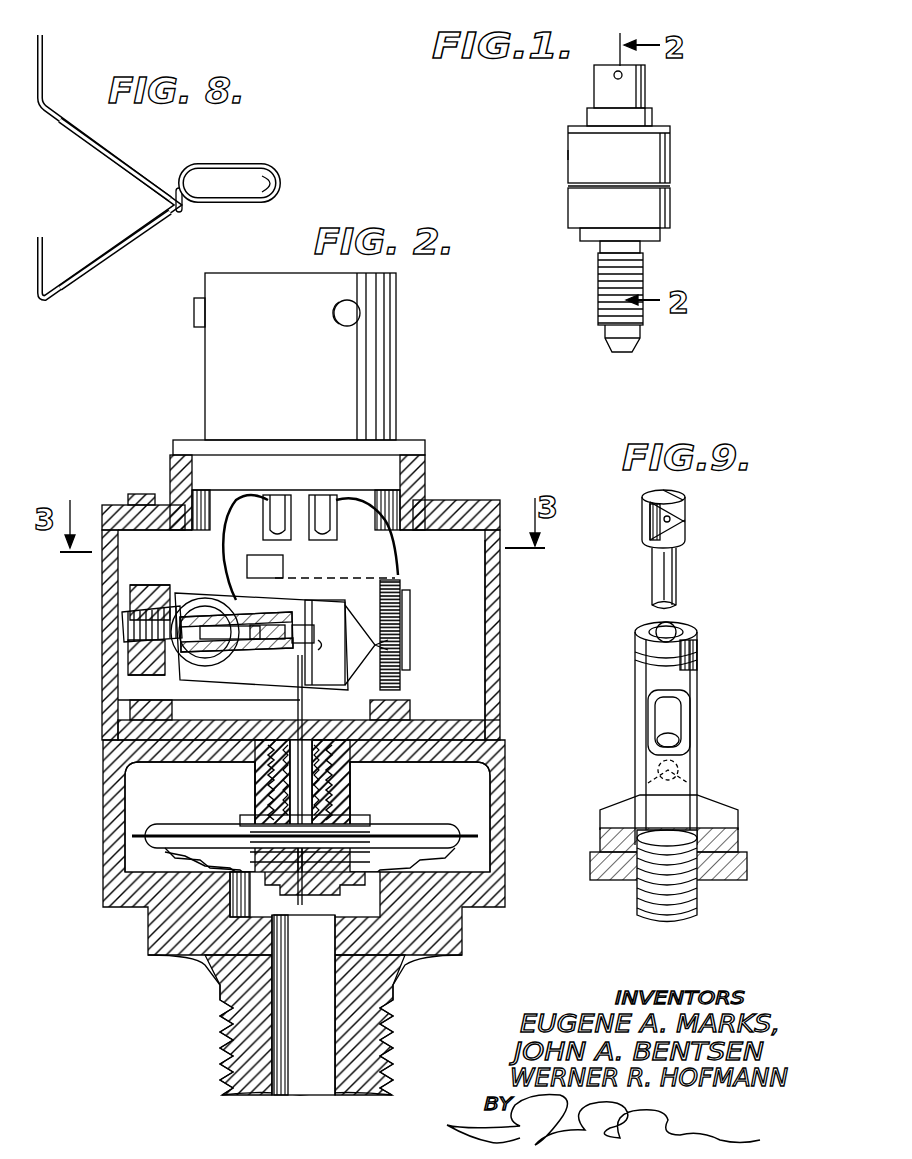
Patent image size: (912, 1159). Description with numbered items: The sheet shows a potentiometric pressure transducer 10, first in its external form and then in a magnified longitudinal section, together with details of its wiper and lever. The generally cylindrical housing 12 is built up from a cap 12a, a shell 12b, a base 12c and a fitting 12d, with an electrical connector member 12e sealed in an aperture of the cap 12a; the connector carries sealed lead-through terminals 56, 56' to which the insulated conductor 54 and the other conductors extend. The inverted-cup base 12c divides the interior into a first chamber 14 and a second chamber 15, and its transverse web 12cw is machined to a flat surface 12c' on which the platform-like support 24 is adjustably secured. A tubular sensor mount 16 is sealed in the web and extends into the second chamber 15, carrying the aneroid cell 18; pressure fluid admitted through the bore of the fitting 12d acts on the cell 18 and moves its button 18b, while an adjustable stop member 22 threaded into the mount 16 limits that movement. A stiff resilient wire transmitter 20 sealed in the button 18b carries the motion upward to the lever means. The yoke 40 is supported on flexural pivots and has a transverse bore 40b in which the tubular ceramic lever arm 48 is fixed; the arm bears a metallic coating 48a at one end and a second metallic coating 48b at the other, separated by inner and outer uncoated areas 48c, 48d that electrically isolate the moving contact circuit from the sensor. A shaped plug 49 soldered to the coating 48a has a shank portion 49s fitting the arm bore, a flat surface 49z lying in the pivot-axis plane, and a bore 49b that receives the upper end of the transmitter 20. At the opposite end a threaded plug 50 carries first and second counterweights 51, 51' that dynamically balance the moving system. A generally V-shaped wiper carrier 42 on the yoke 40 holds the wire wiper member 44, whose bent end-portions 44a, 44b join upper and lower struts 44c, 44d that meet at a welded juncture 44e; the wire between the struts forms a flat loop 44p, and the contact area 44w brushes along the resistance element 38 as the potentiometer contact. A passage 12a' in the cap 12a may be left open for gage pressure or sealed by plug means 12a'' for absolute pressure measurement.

In FIG. 1, the transducer 10 is at (672, 142).
In FIG. 1, the housing 12 is at (668, 168).
In FIG. 1, the cap 12a is at (577, 115).
In FIG. 2, the cap 12a is at (335, 485).
In FIG. 2, the passage 12a' is at (301, 549).
In FIG. 2, the plug means 12a'' is at (140, 496).
In FIG. 1, the shell 12b is at (585, 160).
In FIG. 2, the shell 12b is at (496, 635).
In FIG. 1, the base 12c is at (588, 220).
In FIG. 2, the base 12c is at (338, 847).
In FIG. 2, the flat surface 12c' is at (431, 698).
In FIG. 2, the transverse web 12cw is at (455, 730).
In FIG. 1, the fitting 12d is at (605, 274).
In FIG. 2, the fitting 12d is at (380, 1030).
In FIG. 1, the electrical connector member 12e is at (628, 88).
In FIG. 2, the electrical connector member 12e is at (368, 343).
In FIG. 2, the first chamber 14 is at (468, 595).
In FIG. 2, the second chamber 15 is at (488, 775).
In FIG. 2, the sensor mount 16 is at (340, 780).
In FIG. 2, the aneroid cell 18 is at (405, 828).
In FIG. 2, the button 18b is at (300, 888).
In FIG. 2, the transmitter 20 is at (286, 790).
In FIG. 2, the adjustable stop member 22 is at (270, 770).
In FIG. 2, the support 24 is at (148, 708).
In FIG. 2, the resistance element 38 is at (390, 630).
In FIG. 2, the yoke 40 is at (190, 662).
In FIG. 2, the transverse bore 40b is at (203, 620).
In FIG. 2, the wiper carrier 42 is at (330, 608).
In FIG. 8, the wiper member 44 is at (114, 260).
In FIG. 2, the wiper member 44 is at (360, 620).
In FIG. 8, the end-portion 44a is at (43, 52).
In FIG. 8, the end-portion 44b is at (46, 255).
In FIG. 8, the upper strut 44c is at (103, 142).
In FIG. 8, the lower strut 44d is at (97, 256).
In FIG. 8, the juncture 44e is at (183, 214).
In FIG. 8, the contact area 44w is at (240, 166).
In FIG. 8, the loop 44p is at (278, 186).
In FIG. 2, the lever arm 48 is at (248, 662).
In FIG. 9, the lever arm 48 is at (640, 776).
In FIG. 9, the metallic coating 48a is at (655, 632).
In FIG. 9, the second metallic coating 48b is at (652, 764).
In FIG. 2, the inner uncoated area 48c is at (230, 630).
In FIG. 9, the inner uncoated area 48c is at (662, 712).
In FIG. 9, the outer uncoated area 48d is at (652, 672).
In FIG. 2, the shaped plug 49 is at (314, 625).
In FIG. 9, the shaped plug 49 is at (675, 505).
In FIG. 9, the bore 49b is at (672, 519).
In FIG. 9, the shank portion 49s is at (672, 582).
In FIG. 9, the flat surface 49z is at (673, 495).
In FIG. 2, the threaded plug 50 is at (122, 630).
In FIG. 9, the threaded plug 50 is at (655, 895).
In FIG. 2, the first counterweight 51 is at (113, 630).
In FIG. 9, the first counterweight 51 is at (695, 823).
In FIG. 2, the second counterweight 51' is at (110, 679).
In FIG. 9, the second counterweight 51' is at (694, 865).
In FIG. 2, the insulated conductor 54 is at (224, 540).
In FIG. 2, the lead-through terminal 56 is at (320, 498).
In FIG. 2, the lead-through terminal 56' is at (269, 498).